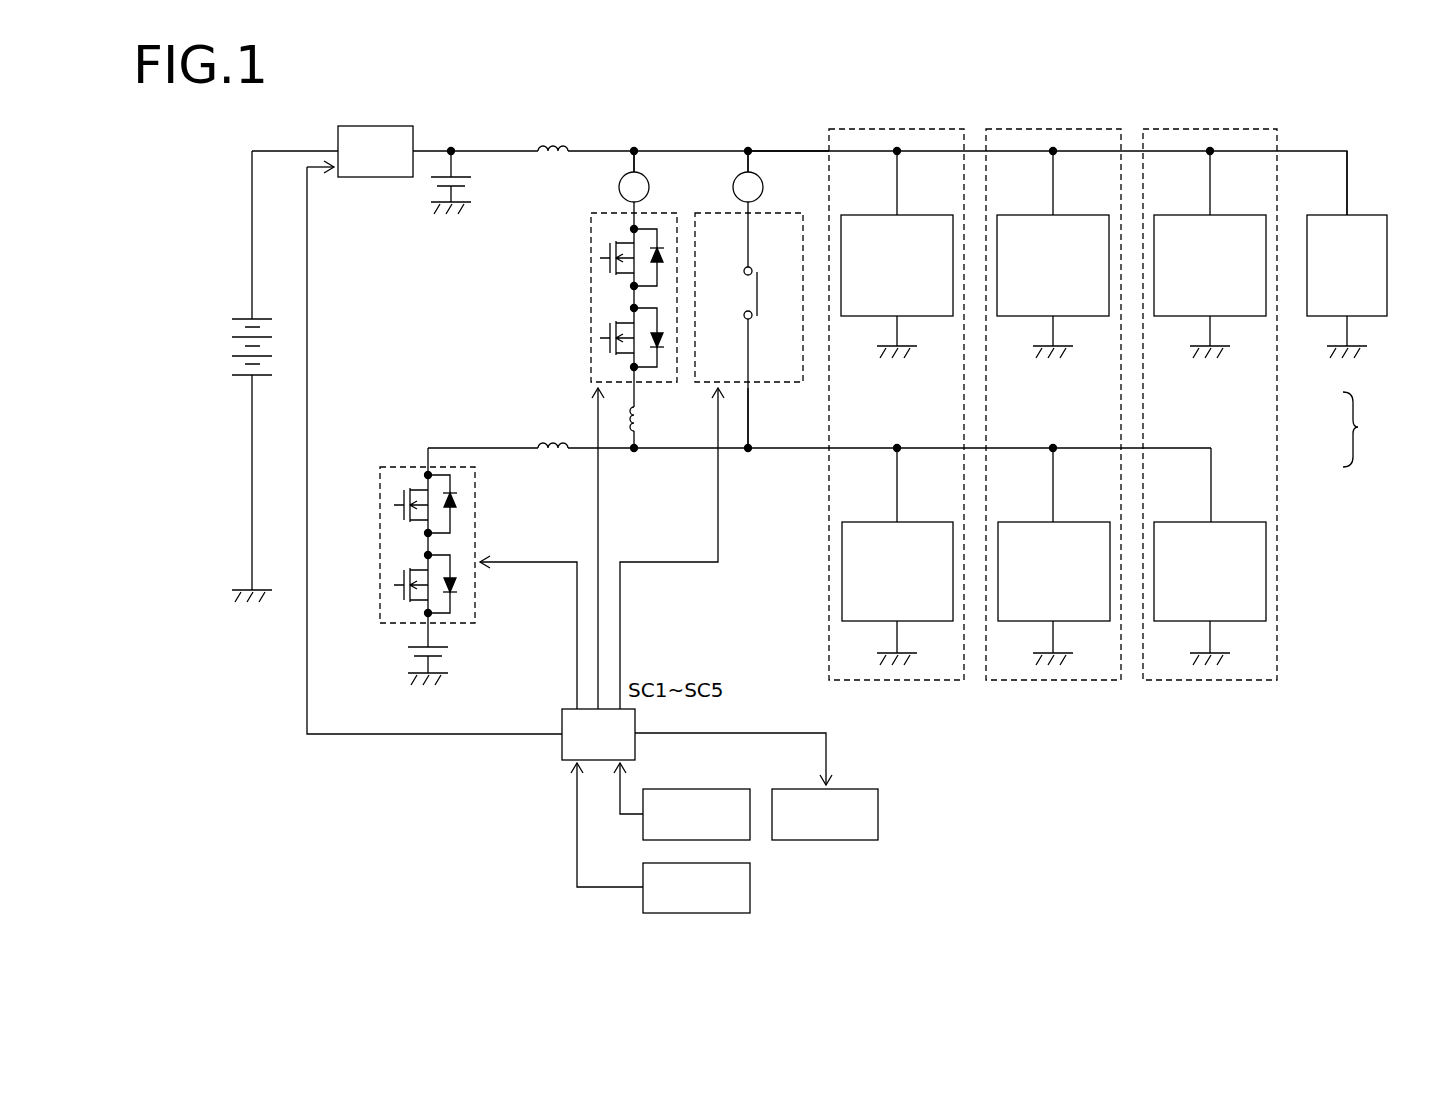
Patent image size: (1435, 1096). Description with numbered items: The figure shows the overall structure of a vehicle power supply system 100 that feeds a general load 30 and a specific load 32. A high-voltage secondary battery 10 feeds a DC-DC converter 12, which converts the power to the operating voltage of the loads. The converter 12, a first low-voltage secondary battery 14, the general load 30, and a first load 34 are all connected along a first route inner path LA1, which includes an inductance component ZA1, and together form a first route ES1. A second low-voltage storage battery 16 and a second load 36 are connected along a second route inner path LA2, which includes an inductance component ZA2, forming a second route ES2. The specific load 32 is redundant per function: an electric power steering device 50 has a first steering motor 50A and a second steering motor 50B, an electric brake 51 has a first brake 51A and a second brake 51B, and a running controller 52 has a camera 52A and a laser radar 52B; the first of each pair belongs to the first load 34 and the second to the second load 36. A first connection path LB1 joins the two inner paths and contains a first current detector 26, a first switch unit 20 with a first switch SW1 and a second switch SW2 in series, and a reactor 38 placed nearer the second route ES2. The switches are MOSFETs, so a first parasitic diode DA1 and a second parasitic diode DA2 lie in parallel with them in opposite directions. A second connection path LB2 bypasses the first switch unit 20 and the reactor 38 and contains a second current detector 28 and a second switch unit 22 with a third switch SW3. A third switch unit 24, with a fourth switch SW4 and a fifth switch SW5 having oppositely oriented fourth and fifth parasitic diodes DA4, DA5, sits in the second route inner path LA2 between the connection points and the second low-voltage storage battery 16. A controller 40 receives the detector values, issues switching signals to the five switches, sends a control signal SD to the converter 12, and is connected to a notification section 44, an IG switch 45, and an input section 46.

The power supply system 100 is at (1394, 93).
The high-voltage secondary battery 10 is at (244, 318).
The DC-DC converter 12 is at (353, 126).
The first low-voltage secondary battery 14 is at (468, 175).
The second low-voltage storage battery 16 is at (446, 639).
The first switch unit 20 is at (589, 223).
The second switch unit 22 is at (791, 213).
The third switch unit 24 is at (392, 466).
The first current detector 26 is at (621, 197).
The second current detector 28 is at (735, 197).
The general load 30 is at (1367, 214).
The specific load 32 is at (1368, 429).
The first load 34 is at (1285, 318).
The second load 36 is at (1285, 545).
The reactor 38 is at (652, 452).
The controller 40 is at (636, 718).
The notification section 44 is at (849, 788).
The IG switch 45 is at (722, 788).
The input section 46 is at (643, 899).
The electric power steering device 50 is at (932, 127).
The first steering motor 50A is at (916, 214).
The second steering motor 50B is at (917, 521).
The electric brake 51 is at (1088, 127).
The first brake 51A is at (1072, 214).
The second brake 51B is at (1073, 521).
The running controller 52 is at (1245, 127).
The camera 52A is at (1229, 214).
The laser radar 52B is at (1230, 521).
The first switch SW1 is at (600, 244).
The second switch SW2 is at (600, 324).
The third switch SW3 is at (757, 298).
The fourth switch SW4 is at (400, 490).
The fifth switch SW5 is at (400, 571).
The first parasitic diode DA1 is at (660, 242).
The second parasitic diode DA2 is at (662, 363).
The fourth parasitic diode DA4 is at (458, 491).
The fifth parasitic diode DA5 is at (457, 594).
The first route ES1 is at (507, 141).
The second route ES2 is at (566, 477).
The inductance component ZA1 is at (560, 143).
The inductance component ZA2 is at (544, 441).
The first connection path LB1 is at (648, 150).
The second connection path LB2 is at (740, 150).
The first route inner path LA1 is at (766, 150).
The second route inner path LA2 is at (748, 450).
The control signal SD is at (434, 450).